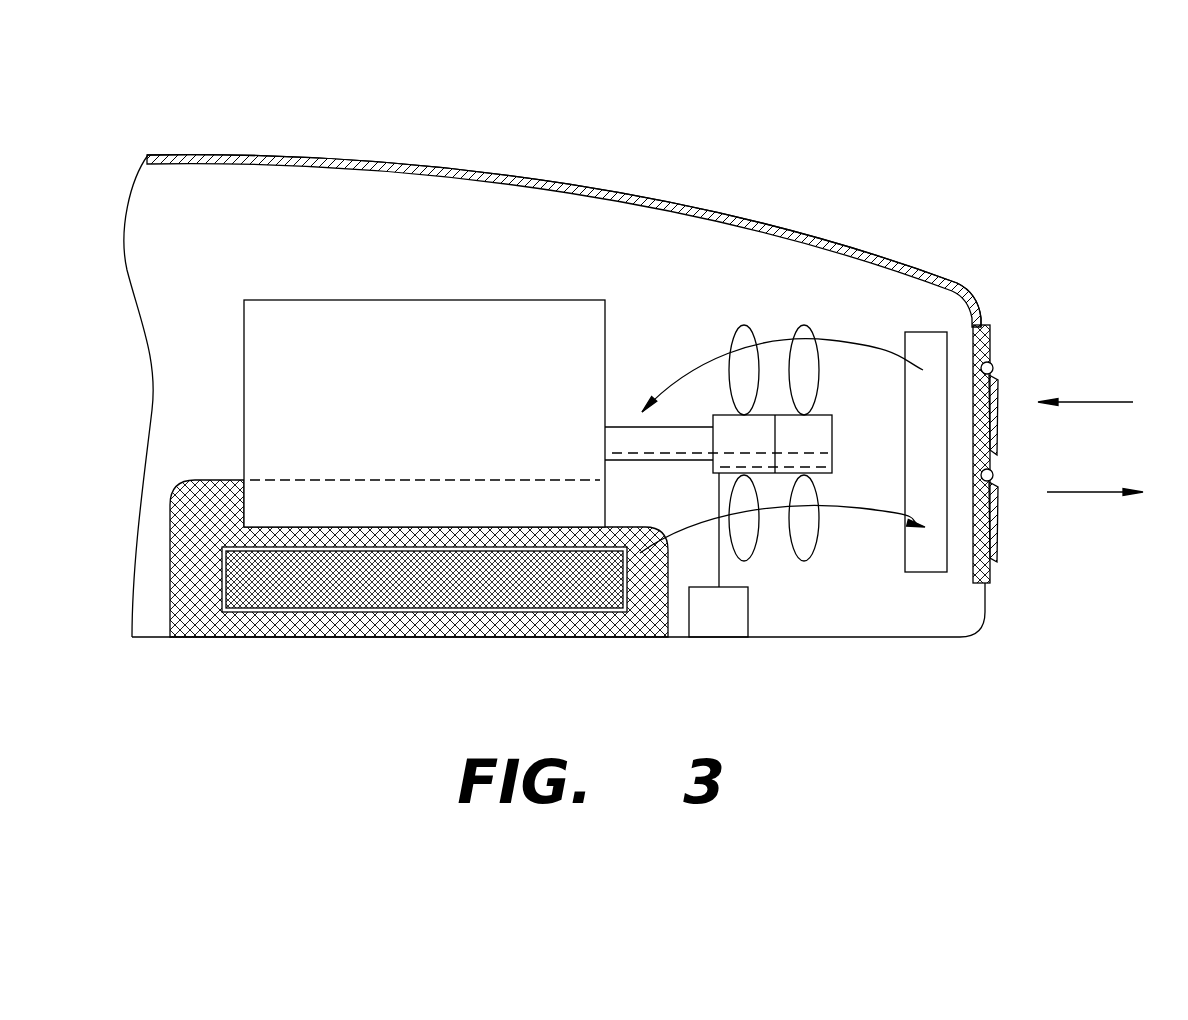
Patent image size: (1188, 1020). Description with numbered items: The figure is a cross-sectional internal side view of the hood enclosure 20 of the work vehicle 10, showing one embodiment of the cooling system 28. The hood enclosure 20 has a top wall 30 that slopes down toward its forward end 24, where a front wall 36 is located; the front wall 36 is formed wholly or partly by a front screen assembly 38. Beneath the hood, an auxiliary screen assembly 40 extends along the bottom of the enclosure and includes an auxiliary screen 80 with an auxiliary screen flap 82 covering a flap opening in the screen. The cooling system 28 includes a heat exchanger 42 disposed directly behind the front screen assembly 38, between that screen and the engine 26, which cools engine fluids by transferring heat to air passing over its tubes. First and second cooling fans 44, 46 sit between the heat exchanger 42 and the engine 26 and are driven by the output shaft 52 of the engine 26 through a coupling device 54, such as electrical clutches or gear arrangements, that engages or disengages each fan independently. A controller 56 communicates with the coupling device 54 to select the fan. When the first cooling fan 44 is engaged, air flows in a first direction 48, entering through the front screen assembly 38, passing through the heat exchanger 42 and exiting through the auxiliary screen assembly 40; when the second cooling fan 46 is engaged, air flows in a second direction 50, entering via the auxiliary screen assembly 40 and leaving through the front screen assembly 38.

The work vehicle 10 is at (603, 341).
The hood enclosure 20 is at (564, 217).
The top wall 30 is at (393, 160).
The cooling system 28 is at (835, 292).
The forward end 24 is at (1029, 401).
The front wall 36 is at (988, 305).
The front screen assembly 38 is at (997, 518).
The heat exchanger 42 is at (925, 575).
The engine 26 is at (440, 410).
The auxiliary screen assembly 40 is at (374, 578).
The auxiliary screen 80 is at (193, 540).
The auxiliary screen flap 82 is at (390, 585).
The output shaft 52 is at (617, 427).
The coupling device 54 is at (818, 435).
The first cooling fan 44 is at (822, 527).
The second cooling fan 46 is at (760, 538).
The controller 56 is at (720, 615).
The first direction 48 is at (707, 345).
The second direction 50 is at (852, 508).